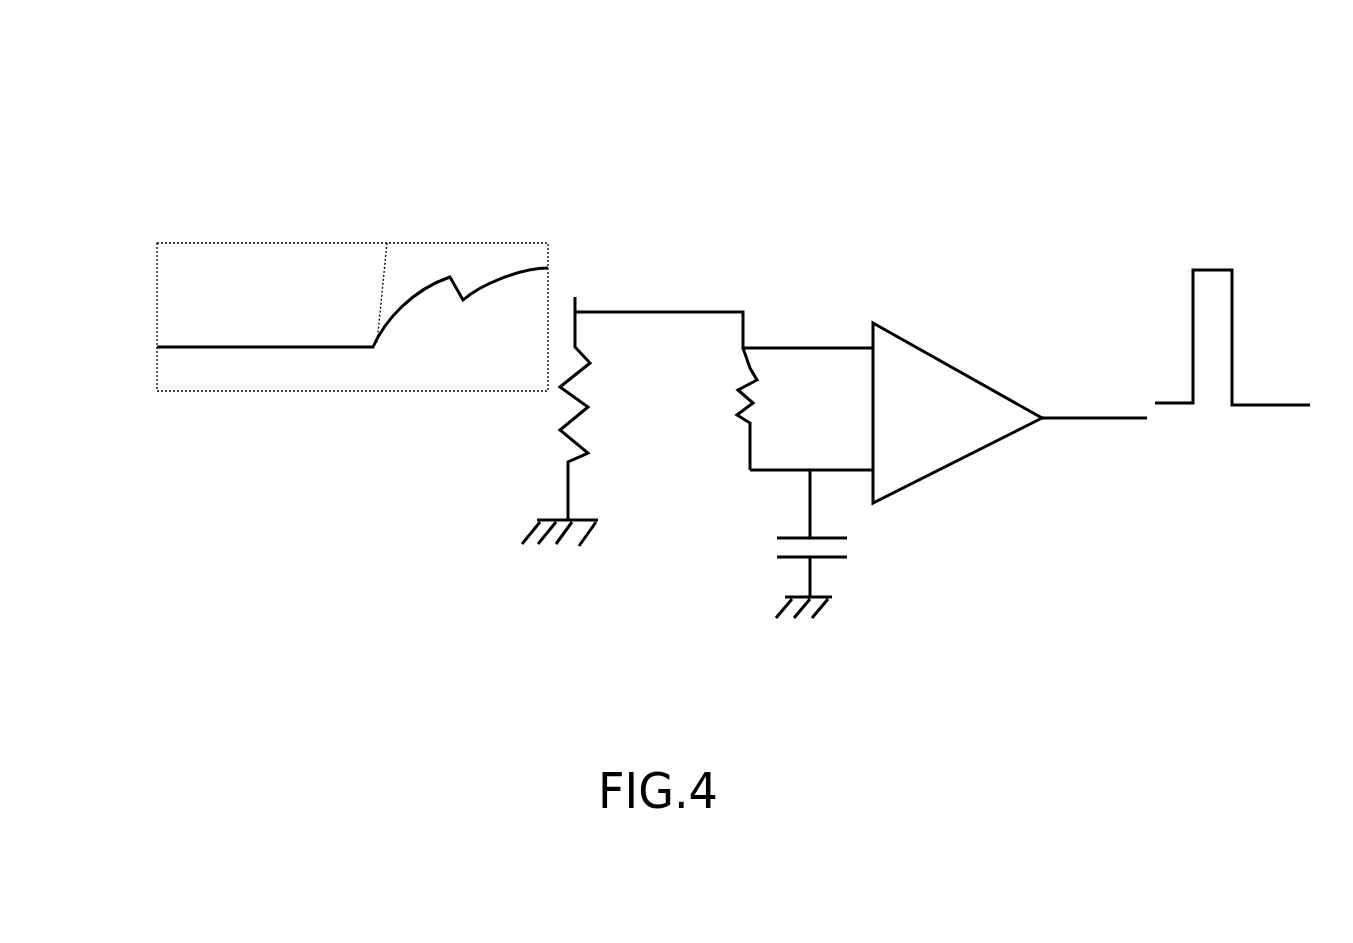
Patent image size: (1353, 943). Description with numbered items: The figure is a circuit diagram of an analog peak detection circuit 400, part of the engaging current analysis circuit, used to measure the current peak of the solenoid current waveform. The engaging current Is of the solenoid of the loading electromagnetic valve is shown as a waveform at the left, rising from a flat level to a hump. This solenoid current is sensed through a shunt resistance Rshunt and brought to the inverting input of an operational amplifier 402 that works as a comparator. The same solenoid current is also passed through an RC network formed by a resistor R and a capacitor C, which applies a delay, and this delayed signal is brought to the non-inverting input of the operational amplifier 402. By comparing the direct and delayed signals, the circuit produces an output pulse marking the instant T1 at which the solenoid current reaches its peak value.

The analog peak detection circuit 400 is at (788, 141).
The operational amplifier 402 is at (952, 357).
The engaging current Is is at (427, 283).
The shunt resistance Rshunt is at (541, 421).
The resistor of the RC network R is at (760, 409).
The capacitor of the RC network C is at (825, 544).
The instant of current peak T1 is at (1232, 316).